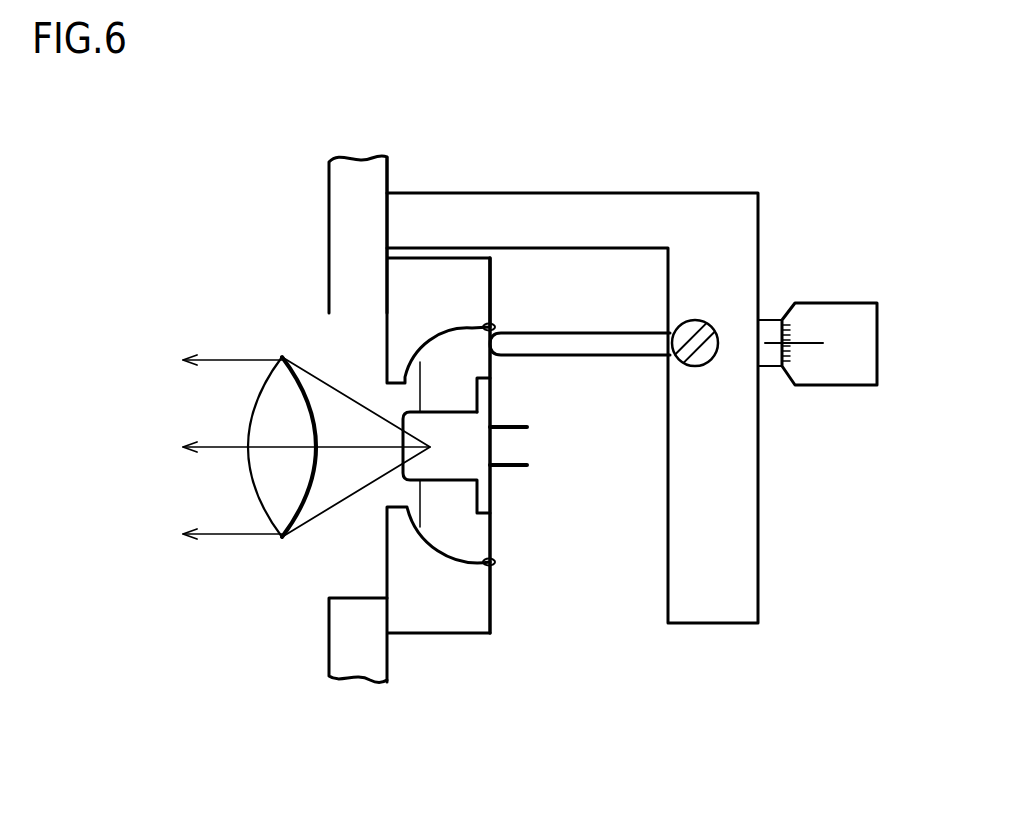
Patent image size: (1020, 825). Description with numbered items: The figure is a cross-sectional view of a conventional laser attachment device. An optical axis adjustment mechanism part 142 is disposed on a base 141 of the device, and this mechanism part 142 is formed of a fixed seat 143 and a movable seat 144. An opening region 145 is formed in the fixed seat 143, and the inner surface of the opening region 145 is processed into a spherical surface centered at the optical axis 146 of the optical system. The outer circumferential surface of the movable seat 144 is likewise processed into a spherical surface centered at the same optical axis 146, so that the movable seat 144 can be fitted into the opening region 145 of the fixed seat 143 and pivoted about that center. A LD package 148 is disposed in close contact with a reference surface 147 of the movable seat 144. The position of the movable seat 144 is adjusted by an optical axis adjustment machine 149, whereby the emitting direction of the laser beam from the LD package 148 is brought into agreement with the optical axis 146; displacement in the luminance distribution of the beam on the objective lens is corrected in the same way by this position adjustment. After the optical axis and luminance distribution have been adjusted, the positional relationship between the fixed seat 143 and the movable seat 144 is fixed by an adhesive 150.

The base 141 is at (352, 667).
The optical axis adjustment mechanism part 142 is at (524, 419).
The fixed seat 143 is at (597, 515).
The movable seat 144 is at (480, 533).
The opening region 145 is at (430, 540).
The optical axis 146 is at (223, 448).
The reference surface 147 is at (477, 390).
The LD package 148 is at (480, 473).
The optical axis adjustment machine 149 is at (578, 347).
The adhesive 150 is at (488, 323).